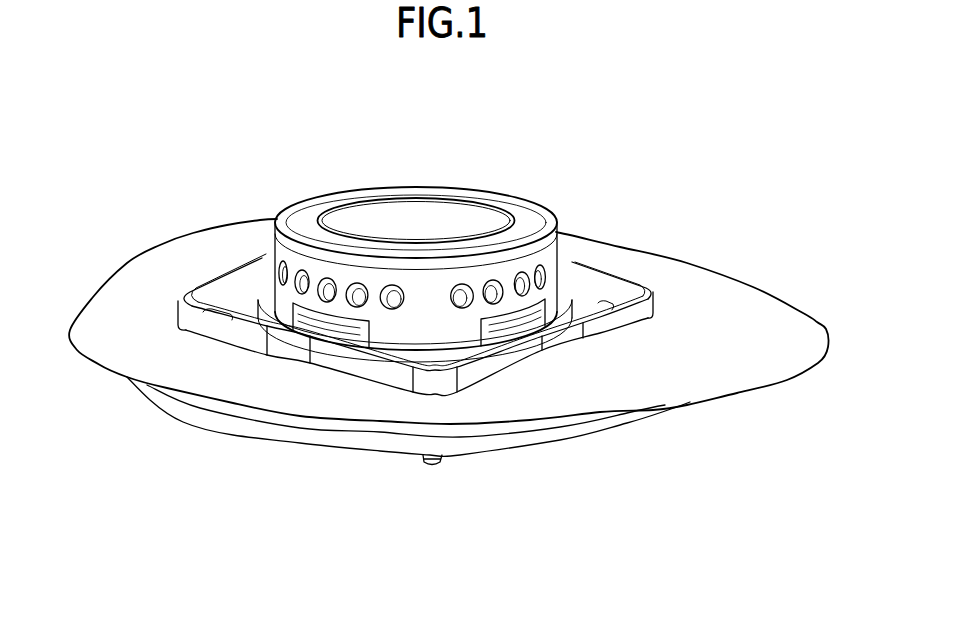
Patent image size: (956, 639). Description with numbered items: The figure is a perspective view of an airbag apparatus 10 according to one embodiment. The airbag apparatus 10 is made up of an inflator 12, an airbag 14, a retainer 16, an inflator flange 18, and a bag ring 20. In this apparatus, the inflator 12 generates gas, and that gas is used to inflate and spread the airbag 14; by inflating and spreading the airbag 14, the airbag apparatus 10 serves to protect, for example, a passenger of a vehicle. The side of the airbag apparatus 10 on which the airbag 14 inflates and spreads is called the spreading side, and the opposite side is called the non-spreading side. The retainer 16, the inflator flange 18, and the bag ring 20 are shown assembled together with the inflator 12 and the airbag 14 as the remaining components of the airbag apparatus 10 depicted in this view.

The airbag apparatus 10 is at (509, 150).
The inflator 12 is at (415, 217).
The airbag 14 is at (146, 282).
The retainer 16 is at (238, 430).
The inflator flange 18 is at (545, 230).
The bag ring 20 is at (245, 307).